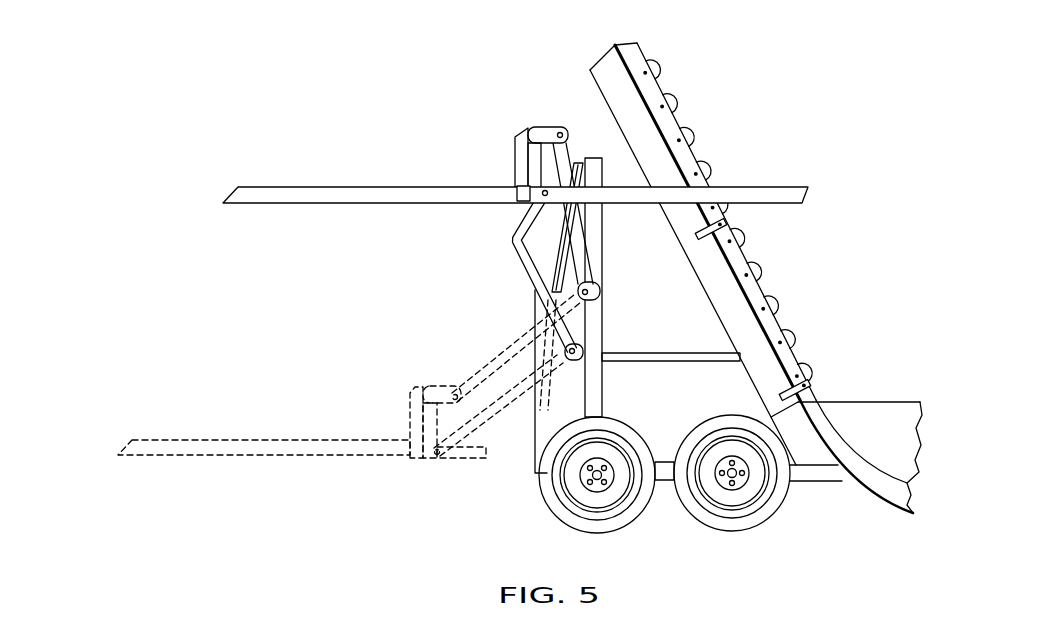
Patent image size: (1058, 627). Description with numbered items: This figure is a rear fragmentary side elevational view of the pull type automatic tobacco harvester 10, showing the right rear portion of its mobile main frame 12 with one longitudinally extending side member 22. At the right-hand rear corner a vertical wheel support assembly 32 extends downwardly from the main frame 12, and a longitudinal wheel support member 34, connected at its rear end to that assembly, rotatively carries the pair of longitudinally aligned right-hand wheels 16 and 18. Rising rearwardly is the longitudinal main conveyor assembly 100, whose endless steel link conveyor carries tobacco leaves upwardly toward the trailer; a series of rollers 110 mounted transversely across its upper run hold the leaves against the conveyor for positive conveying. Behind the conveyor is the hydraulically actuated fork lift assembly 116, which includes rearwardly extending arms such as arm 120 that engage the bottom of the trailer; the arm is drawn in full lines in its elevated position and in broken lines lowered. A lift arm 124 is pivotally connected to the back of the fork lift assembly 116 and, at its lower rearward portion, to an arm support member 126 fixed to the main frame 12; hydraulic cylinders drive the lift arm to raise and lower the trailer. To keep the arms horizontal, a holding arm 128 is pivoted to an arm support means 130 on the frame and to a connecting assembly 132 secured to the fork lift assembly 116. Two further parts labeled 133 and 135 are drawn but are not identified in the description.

The pull type automatic tobacco harvester 10 is at (696, 324).
The main frame 12 is at (725, 254).
The right-hand wheel 16 is at (763, 515).
The right-hand wheel 18 is at (638, 497).
The side member 22 is at (812, 193).
The vertical wheel support assembly 32 is at (598, 403).
The longitudinal wheel support member 34 is at (667, 480).
The longitudinal main conveyor assembly 100 is at (842, 382).
The rollers 110 is at (755, 272).
The fork lift assembly 116 is at (496, 302).
The rearwardly extending arm 120 is at (496, 346).
The lift arm 124 is at (535, 272).
The arm support member 126 is at (576, 352).
The holding arm 128 is at (565, 163).
The arm support means 130 is at (599, 291).
The connecting assembly 132 is at (527, 135).
The hydraulic cylinder 133 is at (567, 243).
The pivot pin 135 is at (540, 298).